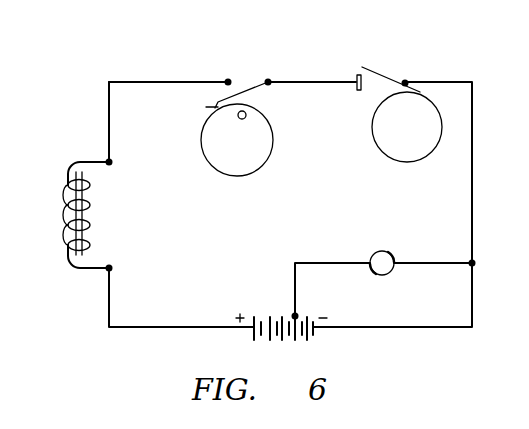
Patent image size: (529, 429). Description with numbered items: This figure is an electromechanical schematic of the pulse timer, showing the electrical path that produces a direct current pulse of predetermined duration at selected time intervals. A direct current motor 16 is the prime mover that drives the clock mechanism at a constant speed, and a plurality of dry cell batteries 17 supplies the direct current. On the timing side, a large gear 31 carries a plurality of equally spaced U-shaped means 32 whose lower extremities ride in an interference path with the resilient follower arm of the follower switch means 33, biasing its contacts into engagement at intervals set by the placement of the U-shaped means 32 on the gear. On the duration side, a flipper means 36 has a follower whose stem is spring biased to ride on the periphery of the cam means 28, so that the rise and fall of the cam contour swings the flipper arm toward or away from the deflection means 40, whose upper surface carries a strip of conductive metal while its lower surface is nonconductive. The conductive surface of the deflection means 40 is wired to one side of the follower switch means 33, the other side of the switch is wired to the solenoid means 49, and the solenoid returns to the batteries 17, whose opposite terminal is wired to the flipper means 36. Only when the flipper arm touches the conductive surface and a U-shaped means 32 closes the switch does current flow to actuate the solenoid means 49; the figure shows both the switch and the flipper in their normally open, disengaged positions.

The direct current motor 16 is at (382, 258).
The dry cell batteries 17 is at (273, 315).
The cam means 28 is at (397, 136).
The large gear 31 is at (224, 150).
The U-shaped means 32 is at (245, 113).
The follower switch means 33 is at (243, 81).
The flipper means 36 is at (397, 74).
The deflection means 40 is at (356, 92).
The solenoid means 49 is at (67, 212).